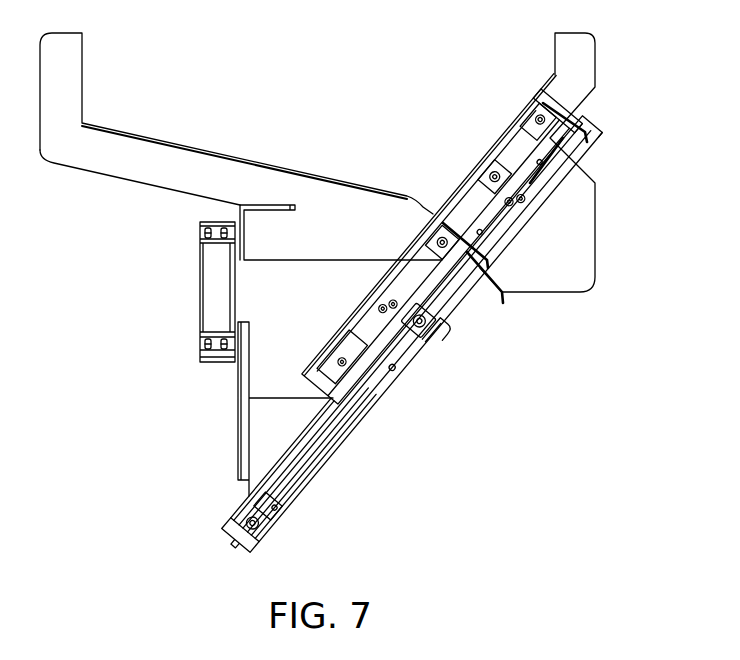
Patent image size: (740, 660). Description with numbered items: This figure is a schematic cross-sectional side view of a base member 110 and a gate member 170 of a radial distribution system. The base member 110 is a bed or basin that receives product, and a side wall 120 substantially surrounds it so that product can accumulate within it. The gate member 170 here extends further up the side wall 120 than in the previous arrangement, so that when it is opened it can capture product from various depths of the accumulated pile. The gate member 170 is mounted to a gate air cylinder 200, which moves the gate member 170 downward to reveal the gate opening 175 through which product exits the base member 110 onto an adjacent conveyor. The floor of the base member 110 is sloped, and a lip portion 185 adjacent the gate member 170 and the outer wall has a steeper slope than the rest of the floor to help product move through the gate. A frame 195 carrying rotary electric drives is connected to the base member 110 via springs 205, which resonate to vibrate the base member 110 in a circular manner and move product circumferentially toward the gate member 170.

The base member 110 is at (243, 157).
The side wall 120 is at (597, 50).
The gate member 170 is at (541, 164).
The gate opening 175 is at (529, 306).
The lip portion 185 is at (433, 213).
The frame 195 is at (238, 407).
The gate air cylinder 200 is at (318, 470).
The springs 205 is at (200, 292).